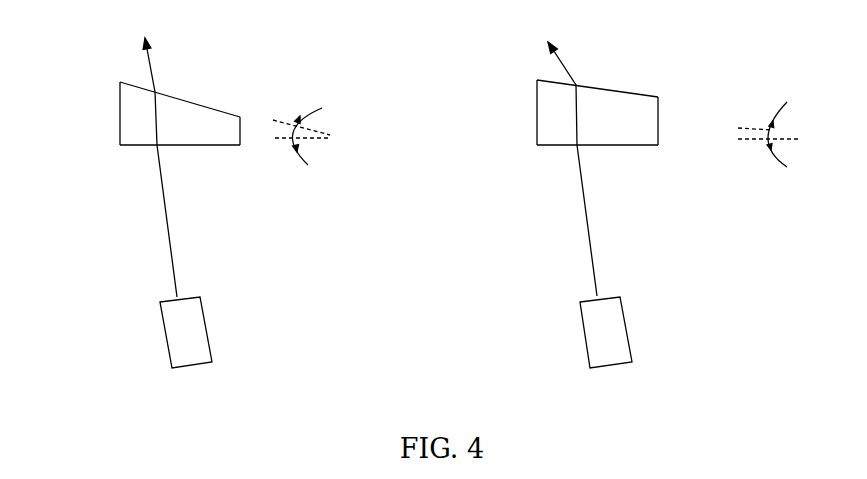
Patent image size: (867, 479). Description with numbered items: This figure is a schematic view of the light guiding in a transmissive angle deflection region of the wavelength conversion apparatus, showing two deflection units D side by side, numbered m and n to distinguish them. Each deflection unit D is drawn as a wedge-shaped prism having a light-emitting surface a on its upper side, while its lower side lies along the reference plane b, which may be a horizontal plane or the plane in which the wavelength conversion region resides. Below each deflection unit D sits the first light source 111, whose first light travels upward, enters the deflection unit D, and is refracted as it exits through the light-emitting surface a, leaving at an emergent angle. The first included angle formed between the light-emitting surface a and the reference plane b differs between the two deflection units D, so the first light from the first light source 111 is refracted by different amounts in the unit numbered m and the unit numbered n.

The first light source 111 is at (193, 333).
The light-emitting surface a is at (183, 98).
The reference plane b is at (187, 145).
The deflection unit D is at (92, 113).